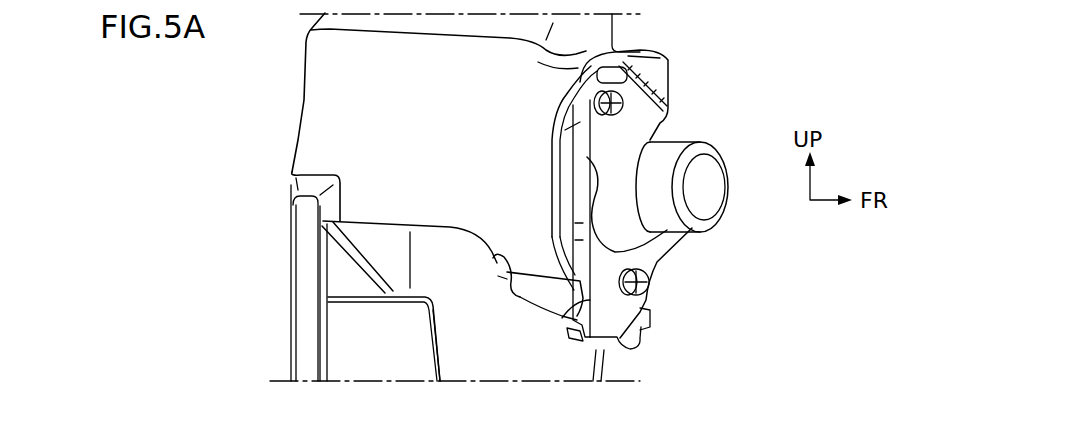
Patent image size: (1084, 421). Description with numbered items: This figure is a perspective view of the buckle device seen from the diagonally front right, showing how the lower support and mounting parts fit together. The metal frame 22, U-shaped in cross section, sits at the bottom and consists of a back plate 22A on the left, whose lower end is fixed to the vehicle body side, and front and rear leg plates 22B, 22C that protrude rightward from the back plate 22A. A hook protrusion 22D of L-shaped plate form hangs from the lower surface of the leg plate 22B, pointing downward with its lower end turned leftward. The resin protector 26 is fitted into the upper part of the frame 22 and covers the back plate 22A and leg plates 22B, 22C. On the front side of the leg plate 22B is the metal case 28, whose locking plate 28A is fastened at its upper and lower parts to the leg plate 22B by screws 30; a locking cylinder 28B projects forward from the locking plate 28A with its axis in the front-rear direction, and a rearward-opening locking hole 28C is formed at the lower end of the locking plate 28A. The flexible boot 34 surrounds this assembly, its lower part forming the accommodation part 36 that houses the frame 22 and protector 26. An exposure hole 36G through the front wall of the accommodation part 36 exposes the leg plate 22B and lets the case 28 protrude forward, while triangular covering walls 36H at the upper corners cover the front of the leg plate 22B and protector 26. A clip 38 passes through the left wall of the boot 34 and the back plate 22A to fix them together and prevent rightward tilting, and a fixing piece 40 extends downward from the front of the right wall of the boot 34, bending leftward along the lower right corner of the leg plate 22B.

The frame 22 is at (432, 328).
The back plate 22A is at (437, 361).
The leg plate 22B is at (558, 133).
The leg plate 22C is at (355, 256).
The hook protrusion 22D is at (568, 331).
The protector 26 is at (655, 42).
The case 28 is at (713, 141).
The locking plate 28A is at (661, 268).
The locking cylinder 28B is at (722, 229).
The locking hole 28C is at (574, 298).
The screw 30 is at (656, 95).
The boot 34 is at (302, 99).
The accommodation part 36 is at (303, 124).
The exposure hole 36G is at (680, 117).
The covering wall 36H is at (671, 52).
The clip 38 is at (493, 264).
The fixing piece 40 is at (527, 305).